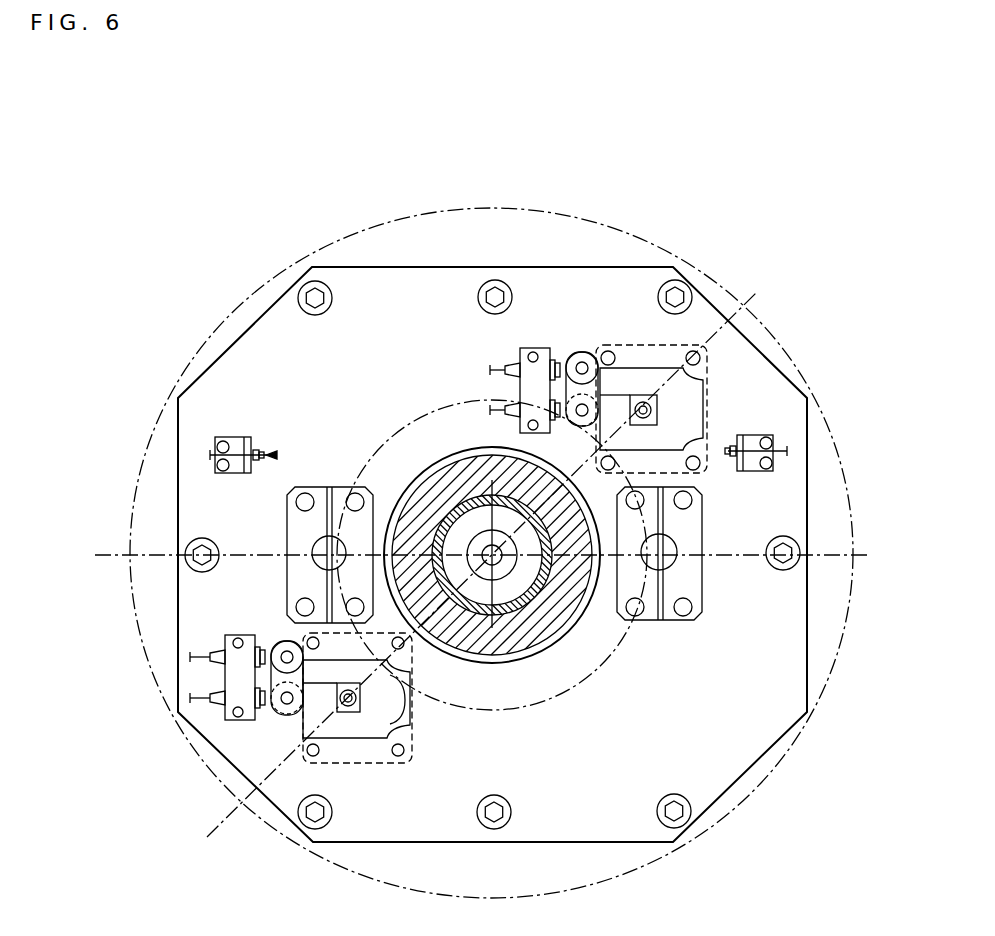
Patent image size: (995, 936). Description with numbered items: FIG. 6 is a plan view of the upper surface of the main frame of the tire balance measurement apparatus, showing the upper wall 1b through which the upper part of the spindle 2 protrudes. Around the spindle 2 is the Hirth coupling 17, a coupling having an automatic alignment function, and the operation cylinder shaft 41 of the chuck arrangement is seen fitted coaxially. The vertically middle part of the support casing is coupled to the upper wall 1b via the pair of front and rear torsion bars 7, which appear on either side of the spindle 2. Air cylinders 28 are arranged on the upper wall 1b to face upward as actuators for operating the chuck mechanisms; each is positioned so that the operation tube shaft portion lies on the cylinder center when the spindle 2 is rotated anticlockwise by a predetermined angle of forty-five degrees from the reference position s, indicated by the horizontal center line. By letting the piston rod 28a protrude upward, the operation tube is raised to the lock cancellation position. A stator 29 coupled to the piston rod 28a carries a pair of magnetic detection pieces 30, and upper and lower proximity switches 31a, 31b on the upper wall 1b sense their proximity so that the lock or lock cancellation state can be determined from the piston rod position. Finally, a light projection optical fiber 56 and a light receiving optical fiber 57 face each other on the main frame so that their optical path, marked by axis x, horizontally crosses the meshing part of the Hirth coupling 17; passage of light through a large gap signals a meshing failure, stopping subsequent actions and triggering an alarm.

The upper wall 1b is at (407, 280).
The spindle 2 is at (557, 625).
The front and rear torsion bars 7 is at (320, 545).
The Hirth coupling 17 is at (428, 394).
The air cylinder 28 is at (637, 356).
The piston rod 28a is at (392, 725).
The stator 29 is at (318, 690).
The detection pieces 30 is at (580, 352).
The proximity switch 31a is at (530, 406).
The proximity switch 31b is at (530, 370).
The operation cylinder shaft 41 is at (483, 613).
The light projection optical fiber 56 is at (755, 446).
The light receiving optical fiber 57 is at (245, 450).
The axis x is at (492, 555).
The reference position s is at (87, 555).